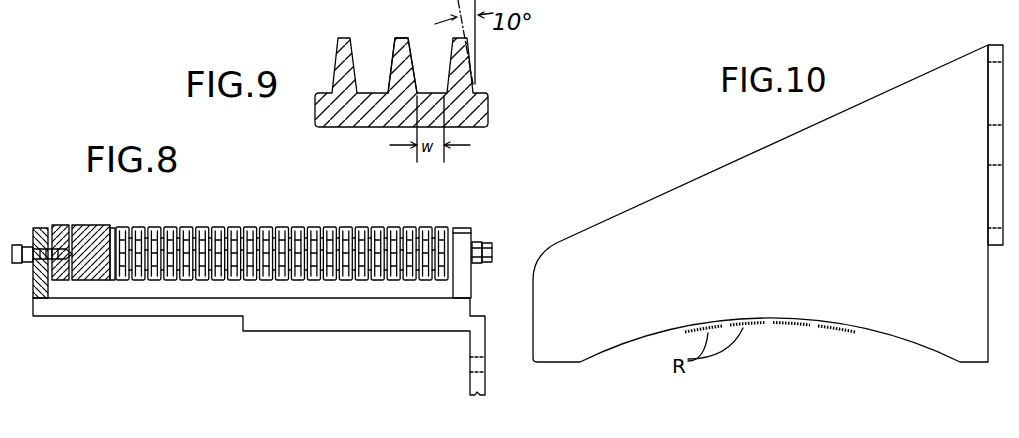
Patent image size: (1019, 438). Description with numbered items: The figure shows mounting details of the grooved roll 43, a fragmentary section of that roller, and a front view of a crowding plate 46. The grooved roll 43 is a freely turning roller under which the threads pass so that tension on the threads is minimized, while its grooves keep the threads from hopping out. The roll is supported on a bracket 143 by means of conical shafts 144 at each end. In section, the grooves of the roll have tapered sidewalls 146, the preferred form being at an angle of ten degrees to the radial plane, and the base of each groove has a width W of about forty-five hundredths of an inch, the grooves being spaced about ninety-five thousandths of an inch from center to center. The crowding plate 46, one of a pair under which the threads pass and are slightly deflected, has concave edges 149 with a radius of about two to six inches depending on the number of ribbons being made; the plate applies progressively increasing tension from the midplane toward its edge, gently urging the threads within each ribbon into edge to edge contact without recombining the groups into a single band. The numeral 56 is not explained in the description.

In FIG. 8, the grooved roll 43 is at (312, 222).
In FIG. 9, the grooved roll 43 is at (493, 102).
In FIG. 8, the bracket 143 is at (226, 305).
In FIG. 8, the conical shafts 144 is at (11, 252).
In FIG. 9, the tapered sidewalls 146 is at (388, 62).
In FIG. 10, the crowding plate 46 is at (735, 168).
In FIG. 10, the concave edges 149 is at (887, 337).
In FIG. 9, the element 56 is at (191, 6).